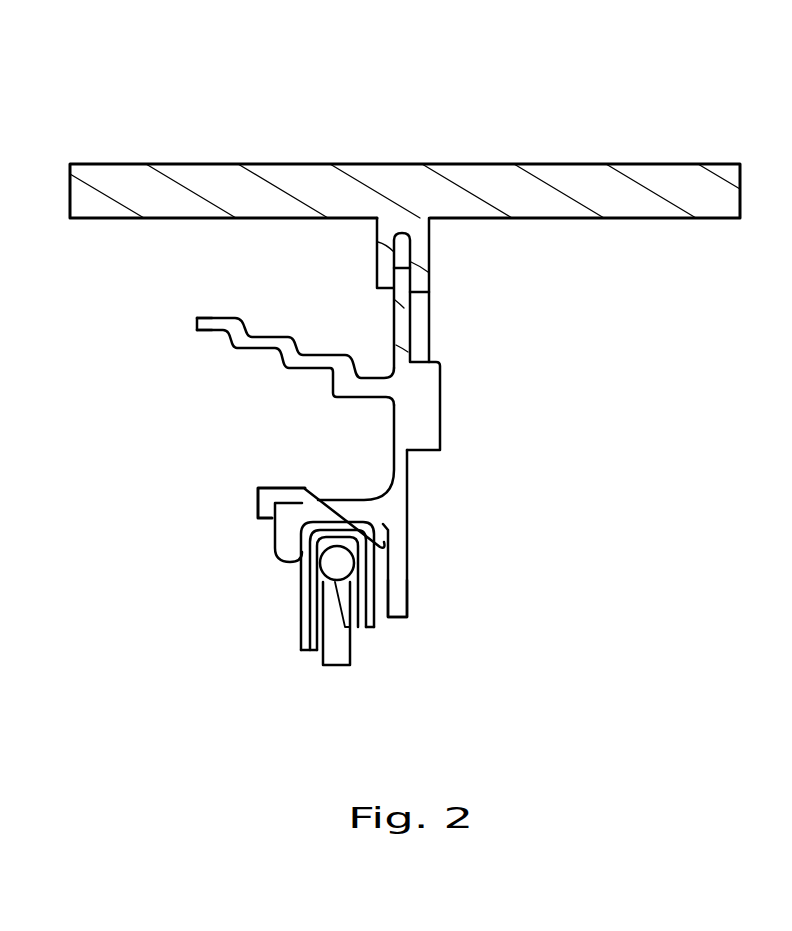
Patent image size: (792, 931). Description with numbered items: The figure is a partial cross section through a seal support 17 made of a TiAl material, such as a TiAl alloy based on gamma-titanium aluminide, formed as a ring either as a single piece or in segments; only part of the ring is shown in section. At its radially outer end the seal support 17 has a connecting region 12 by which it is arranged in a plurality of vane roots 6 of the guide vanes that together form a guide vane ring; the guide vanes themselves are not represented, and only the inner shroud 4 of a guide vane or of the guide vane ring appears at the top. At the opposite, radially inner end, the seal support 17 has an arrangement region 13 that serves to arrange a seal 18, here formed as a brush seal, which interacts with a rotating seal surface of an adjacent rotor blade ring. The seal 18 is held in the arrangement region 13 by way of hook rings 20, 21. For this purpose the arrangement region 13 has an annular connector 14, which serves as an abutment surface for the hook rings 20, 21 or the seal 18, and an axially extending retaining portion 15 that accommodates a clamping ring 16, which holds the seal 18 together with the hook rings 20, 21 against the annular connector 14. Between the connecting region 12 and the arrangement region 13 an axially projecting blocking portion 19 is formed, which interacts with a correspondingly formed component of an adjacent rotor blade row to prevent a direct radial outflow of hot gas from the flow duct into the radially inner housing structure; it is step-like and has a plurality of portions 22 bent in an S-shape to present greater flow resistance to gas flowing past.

The inner shroud 4 is at (612, 192).
The vane root 6 is at (433, 248).
The connecting region 12 is at (398, 313).
The arrangement region 13 is at (388, 507).
The annular connector 14 is at (395, 597).
The retaining portion 15 is at (259, 508).
The clamping ring 16 is at (274, 556).
The seal support 17 is at (408, 477).
The seal 18 is at (333, 620).
The blocking portion 19 is at (197, 330).
The hook ring 20 is at (367, 625).
The hook ring 21 is at (299, 597).
The S-shaped bent portion 22 is at (287, 362).